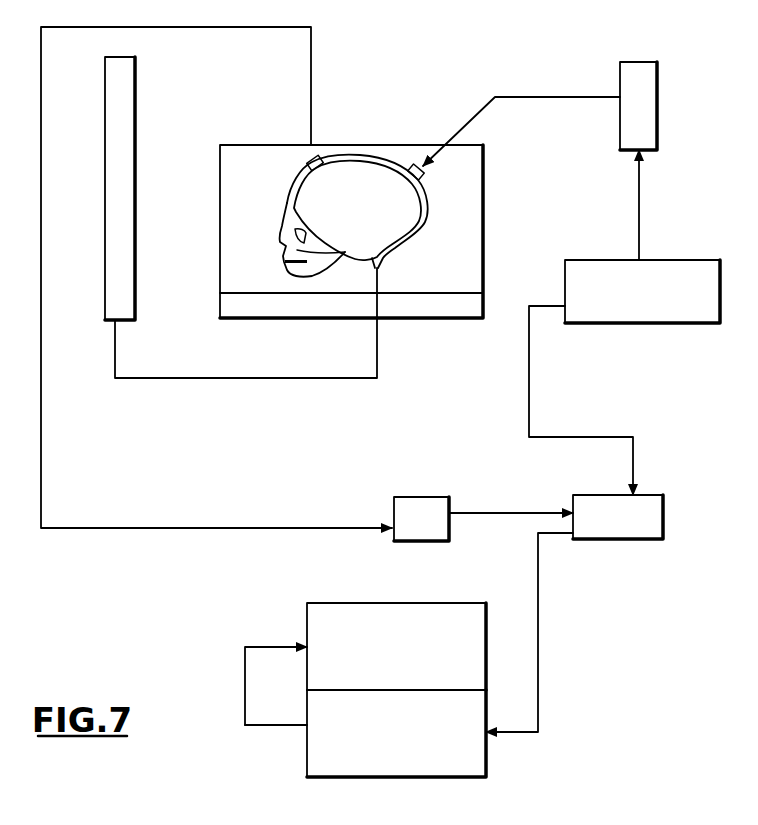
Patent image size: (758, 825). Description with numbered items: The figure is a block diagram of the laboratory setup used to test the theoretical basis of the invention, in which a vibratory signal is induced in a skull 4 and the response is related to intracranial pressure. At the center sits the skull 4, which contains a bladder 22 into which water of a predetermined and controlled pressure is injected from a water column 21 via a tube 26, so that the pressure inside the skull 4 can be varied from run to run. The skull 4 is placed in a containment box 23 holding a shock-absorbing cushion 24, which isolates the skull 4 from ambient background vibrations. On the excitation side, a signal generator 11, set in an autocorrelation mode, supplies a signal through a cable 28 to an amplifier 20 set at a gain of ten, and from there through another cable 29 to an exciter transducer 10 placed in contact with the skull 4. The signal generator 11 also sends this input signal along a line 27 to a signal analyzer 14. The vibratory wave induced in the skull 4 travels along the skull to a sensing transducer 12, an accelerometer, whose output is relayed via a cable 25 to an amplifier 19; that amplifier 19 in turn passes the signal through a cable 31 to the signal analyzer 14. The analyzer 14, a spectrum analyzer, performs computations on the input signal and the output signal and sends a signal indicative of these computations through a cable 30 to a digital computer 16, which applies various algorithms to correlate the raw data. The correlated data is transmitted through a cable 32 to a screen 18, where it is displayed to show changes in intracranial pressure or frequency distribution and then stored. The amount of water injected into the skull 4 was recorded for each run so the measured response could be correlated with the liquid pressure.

The skull 4 is at (290, 198).
The exciter transducer 10 is at (423, 181).
The signal generator 11 is at (673, 315).
The sensing transducer 12 is at (320, 154).
The signal analyzer 14 is at (637, 527).
The digital computer 16 is at (318, 758).
The computer monitor 18 is at (318, 627).
The amplifier 19 is at (417, 532).
The amplifier 20 is at (657, 99).
The water column 21 is at (117, 300).
The bladder 22 is at (393, 222).
The containment box 23 is at (497, 194).
The shock-absorbing cushion 24 is at (248, 313).
The cable 25 is at (311, 63).
The tube 26 is at (208, 378).
The control line 27 is at (529, 388).
The cable 28 is at (639, 195).
The cable 29 is at (507, 93).
The cable 30 is at (538, 617).
The cable 31 is at (480, 508).
The cable 32 is at (245, 685).